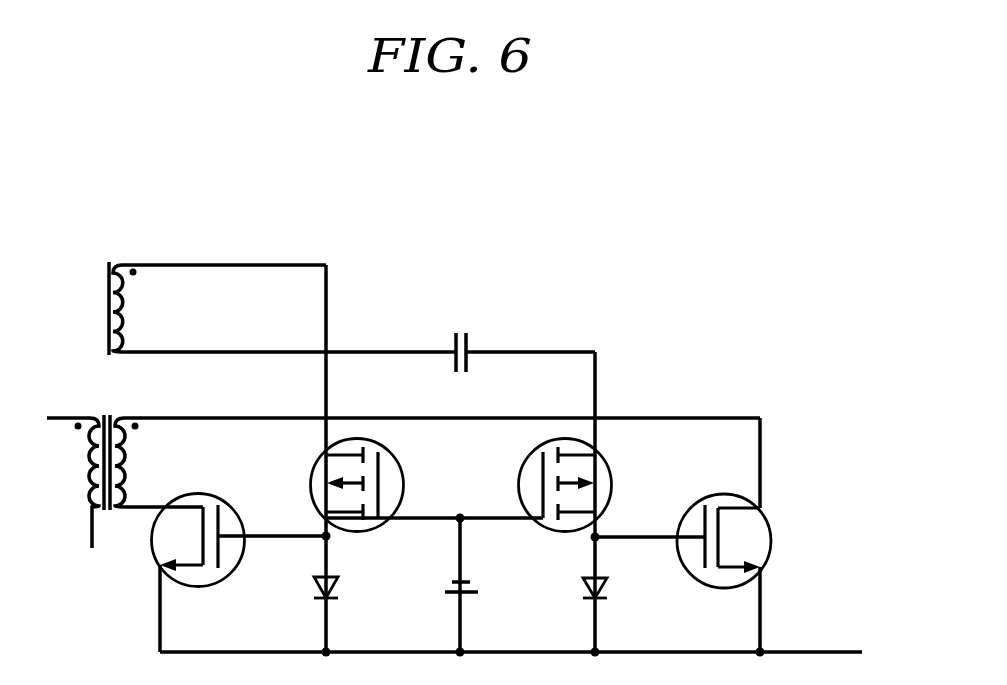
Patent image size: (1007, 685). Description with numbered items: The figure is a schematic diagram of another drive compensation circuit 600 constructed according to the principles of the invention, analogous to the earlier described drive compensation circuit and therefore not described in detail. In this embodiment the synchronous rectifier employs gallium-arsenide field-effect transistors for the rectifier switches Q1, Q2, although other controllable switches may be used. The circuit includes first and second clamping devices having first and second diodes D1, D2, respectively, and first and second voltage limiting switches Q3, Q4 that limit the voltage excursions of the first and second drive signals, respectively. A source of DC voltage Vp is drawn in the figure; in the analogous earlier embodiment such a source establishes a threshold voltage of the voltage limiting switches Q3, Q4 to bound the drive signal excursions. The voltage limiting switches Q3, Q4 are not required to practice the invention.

The drive compensation circuit 600 is at (612, 246).
The rectifier switch Q1 is at (181, 540).
The rectifier switch Q2 is at (743, 541).
The first voltage limiting switch Q3 is at (339, 485).
The second voltage limiting switch Q4 is at (547, 485).
The first diode D1 is at (310, 587).
The second diode D2 is at (577, 589).
The supply voltage source Vp is at (444, 586).